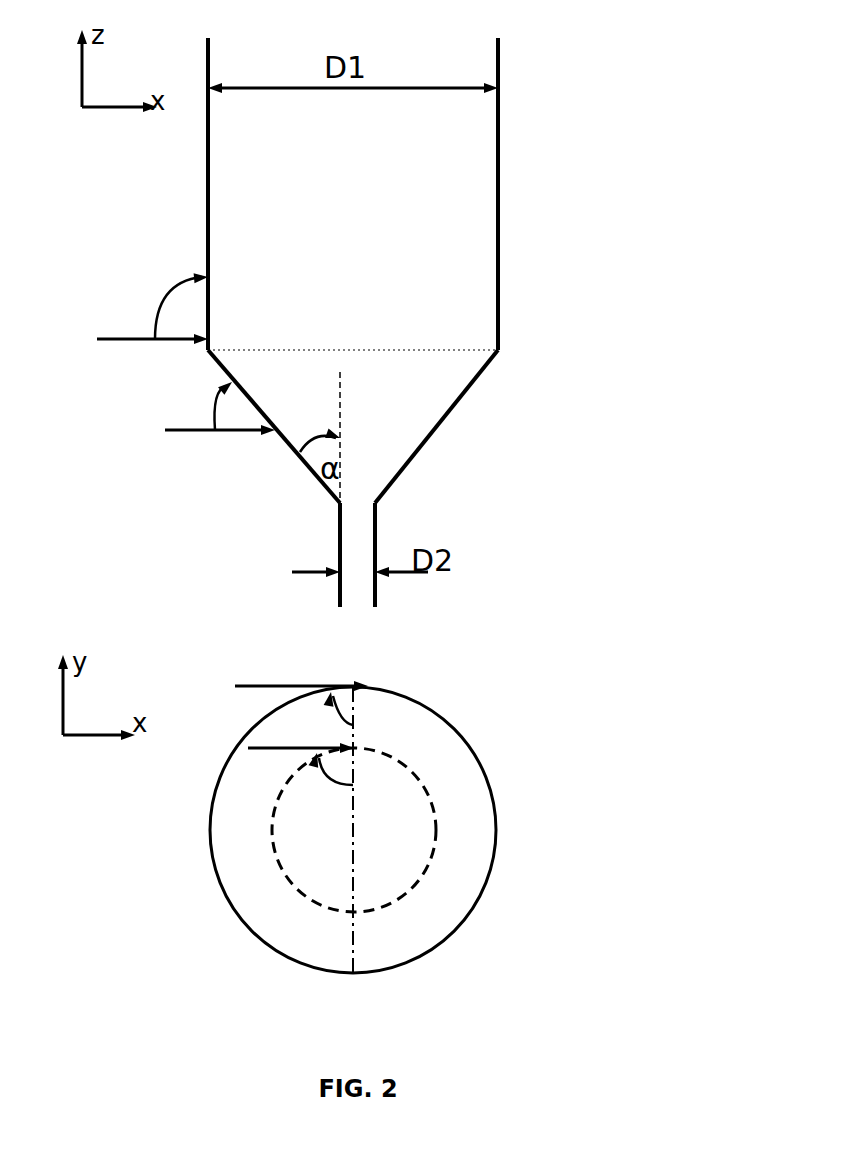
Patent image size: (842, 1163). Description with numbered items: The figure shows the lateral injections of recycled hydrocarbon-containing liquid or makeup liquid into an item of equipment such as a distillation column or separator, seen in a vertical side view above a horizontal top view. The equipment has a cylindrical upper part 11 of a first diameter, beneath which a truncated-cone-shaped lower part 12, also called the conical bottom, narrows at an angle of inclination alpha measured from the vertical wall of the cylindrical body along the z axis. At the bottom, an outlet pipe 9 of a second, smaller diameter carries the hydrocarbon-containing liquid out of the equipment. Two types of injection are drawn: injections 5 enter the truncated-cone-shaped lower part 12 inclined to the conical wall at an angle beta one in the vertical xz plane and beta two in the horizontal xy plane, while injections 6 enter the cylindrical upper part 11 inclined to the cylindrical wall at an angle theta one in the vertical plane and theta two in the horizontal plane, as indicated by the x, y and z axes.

The injections into the truncated-cone-shaped part 5 is at (187, 432).
The injections into the cylindrical part 6 is at (147, 341).
The outlet pipe 9 is at (377, 585).
The cylindrical upper part 11 is at (498, 165).
The truncated-cone-shaped lower part 12 is at (428, 440).